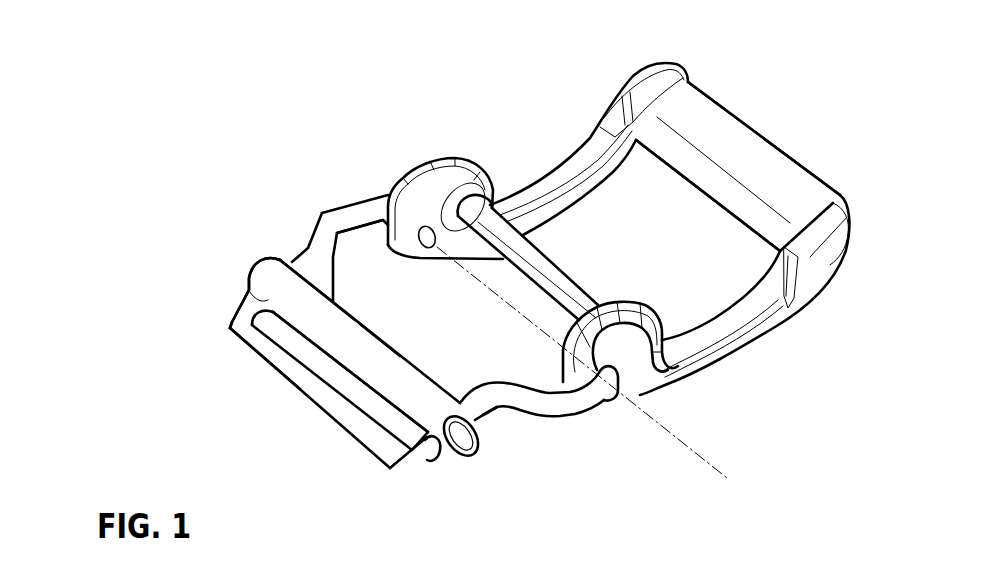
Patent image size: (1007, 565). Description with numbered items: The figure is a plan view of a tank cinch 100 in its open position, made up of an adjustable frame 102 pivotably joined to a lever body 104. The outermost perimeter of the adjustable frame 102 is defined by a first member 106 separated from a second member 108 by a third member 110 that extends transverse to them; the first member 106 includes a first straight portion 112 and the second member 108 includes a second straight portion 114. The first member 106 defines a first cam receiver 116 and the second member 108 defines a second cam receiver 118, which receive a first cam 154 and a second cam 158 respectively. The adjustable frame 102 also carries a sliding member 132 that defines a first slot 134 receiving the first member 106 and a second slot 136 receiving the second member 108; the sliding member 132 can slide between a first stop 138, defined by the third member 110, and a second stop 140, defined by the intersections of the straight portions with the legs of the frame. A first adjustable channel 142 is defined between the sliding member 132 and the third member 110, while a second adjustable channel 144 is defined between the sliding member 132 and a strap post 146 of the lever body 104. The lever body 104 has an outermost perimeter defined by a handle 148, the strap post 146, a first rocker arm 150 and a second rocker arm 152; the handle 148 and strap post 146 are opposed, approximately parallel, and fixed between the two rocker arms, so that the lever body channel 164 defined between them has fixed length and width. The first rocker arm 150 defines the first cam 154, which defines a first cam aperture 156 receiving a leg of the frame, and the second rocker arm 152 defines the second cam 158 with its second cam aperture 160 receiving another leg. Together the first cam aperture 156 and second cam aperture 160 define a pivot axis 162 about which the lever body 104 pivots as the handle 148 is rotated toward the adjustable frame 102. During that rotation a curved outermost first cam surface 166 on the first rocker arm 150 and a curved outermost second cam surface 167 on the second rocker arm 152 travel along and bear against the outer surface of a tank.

The tank cinch 100 is at (185, 52).
The adjustable frame 102 is at (168, 193).
The lever body 104 is at (432, 62).
The first member 106 is at (340, 232).
The second member 108 is at (568, 403).
The third member 110 is at (313, 398).
The first straight portion 112 is at (295, 260).
The second straight portion 114 is at (490, 412).
The first cam receiver 116 is at (366, 241).
The second cam receiver 118 is at (548, 376).
The sliding member 132 is at (333, 323).
The first slot 134 is at (250, 295).
The second slot 136 is at (423, 450).
The first stop 138 is at (236, 330).
The second stop 140 is at (308, 237).
The first adjustable channel 142 is at (320, 376).
The second adjustable channel 144 is at (405, 342).
The strap post 146 is at (505, 243).
The handle 148 is at (727, 140).
The first rocker arm 150 is at (550, 187).
The second rocker arm 152 is at (742, 343).
The first cam 154 is at (440, 200).
The first cam aperture 156 is at (434, 251).
The second cam 158 is at (657, 338).
The second cam aperture 160 is at (608, 392).
The pivot axis 162 is at (715, 468).
The lever body channel 164 is at (729, 208).
The first cam surface 166 is at (405, 193).
The second cam surface 167 is at (621, 303).